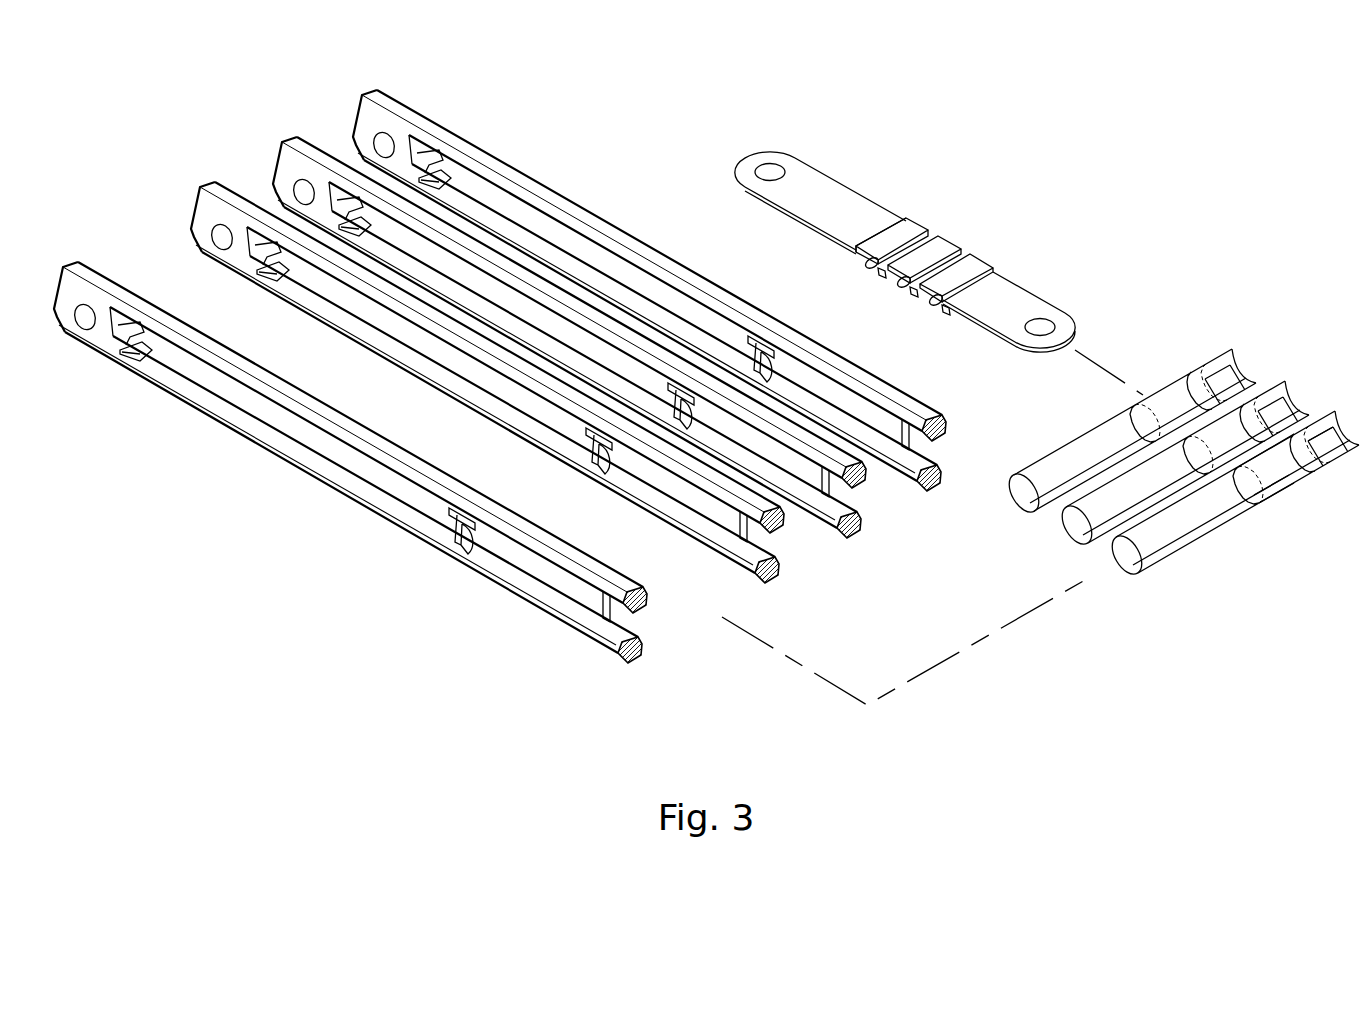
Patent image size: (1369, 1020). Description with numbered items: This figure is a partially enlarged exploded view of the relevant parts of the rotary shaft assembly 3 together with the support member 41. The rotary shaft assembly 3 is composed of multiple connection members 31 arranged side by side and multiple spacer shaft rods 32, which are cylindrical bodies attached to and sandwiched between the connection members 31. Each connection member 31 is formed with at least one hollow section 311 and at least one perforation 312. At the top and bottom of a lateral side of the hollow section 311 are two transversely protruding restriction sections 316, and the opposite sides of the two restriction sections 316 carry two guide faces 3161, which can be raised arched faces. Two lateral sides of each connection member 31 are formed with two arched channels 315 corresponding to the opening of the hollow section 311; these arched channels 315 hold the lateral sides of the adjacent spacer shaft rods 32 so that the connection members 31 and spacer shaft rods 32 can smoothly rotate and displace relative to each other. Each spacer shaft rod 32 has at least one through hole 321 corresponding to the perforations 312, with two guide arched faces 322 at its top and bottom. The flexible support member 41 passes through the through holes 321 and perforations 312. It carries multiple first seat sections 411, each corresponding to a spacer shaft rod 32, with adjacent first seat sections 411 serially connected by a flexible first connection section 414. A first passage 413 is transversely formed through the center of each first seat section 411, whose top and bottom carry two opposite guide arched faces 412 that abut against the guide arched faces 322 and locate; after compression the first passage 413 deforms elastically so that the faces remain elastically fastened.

The rotary shaft assembly 3 is at (37, 240).
The connection member 31 is at (122, 295).
The hollow section 311 is at (364, 468).
The perforation 312 is at (616, 624).
The arched channel 315 is at (540, 575).
The restriction section 316 is at (150, 352).
The guide face 3161 is at (136, 347).
The spacer shaft rod 32 is at (1173, 550).
The through hole 321 is at (1277, 500).
The guide arched face 322 is at (1288, 478).
The support member 41 is at (840, 197).
The first seat section 411 is at (903, 223).
The opposite guide arched face 412 is at (917, 230).
The first passage 413 is at (875, 267).
The first connection section 414 is at (890, 277).